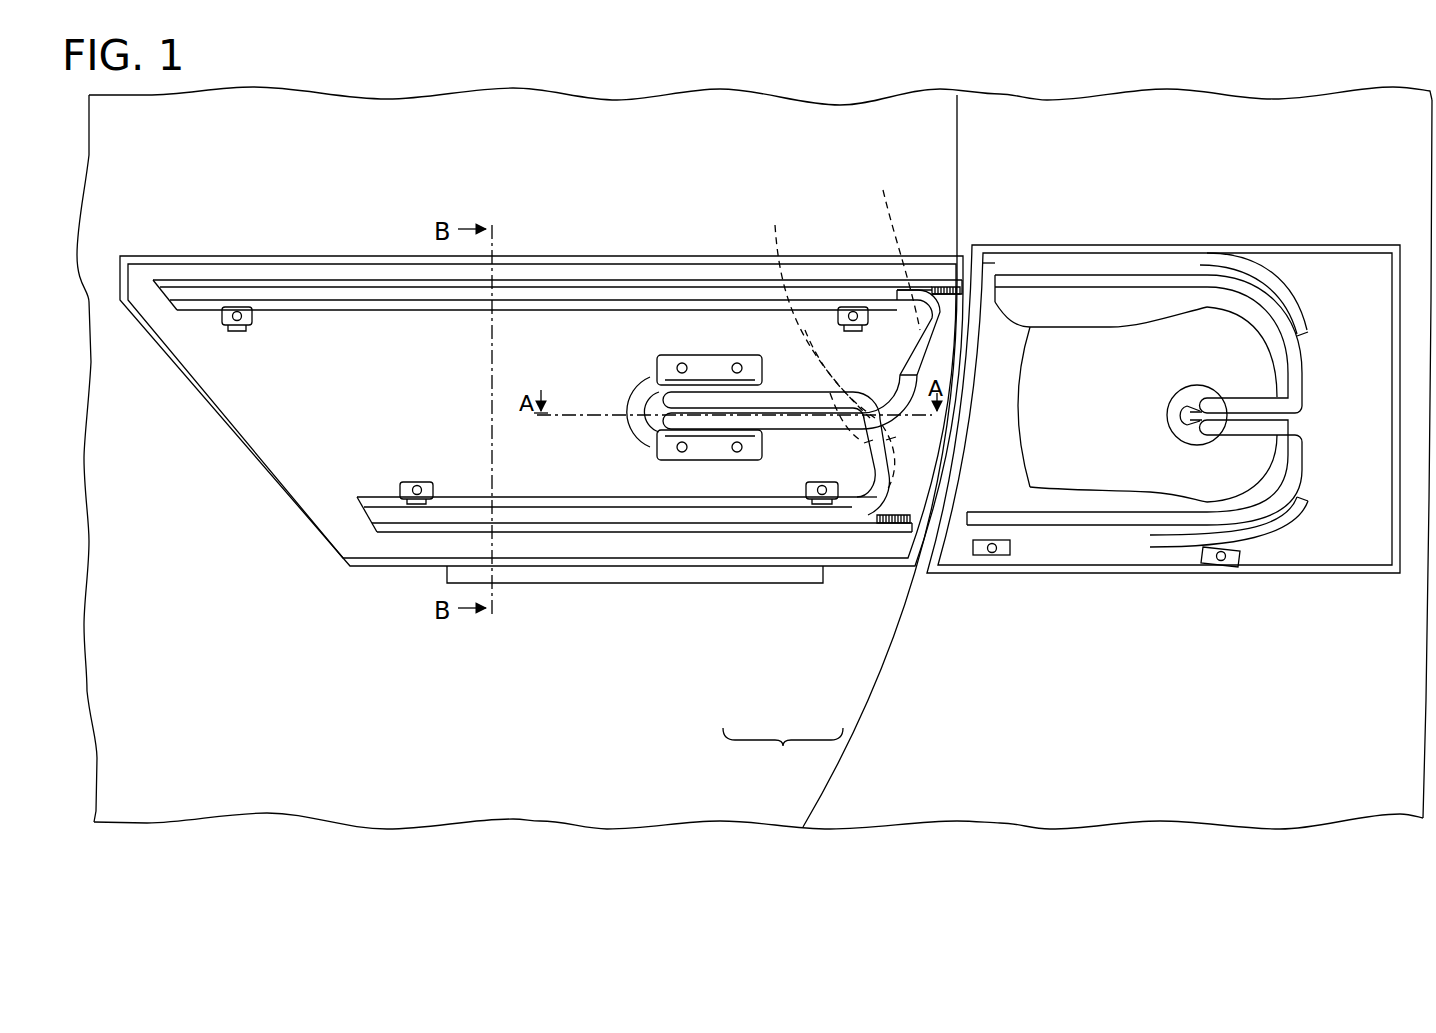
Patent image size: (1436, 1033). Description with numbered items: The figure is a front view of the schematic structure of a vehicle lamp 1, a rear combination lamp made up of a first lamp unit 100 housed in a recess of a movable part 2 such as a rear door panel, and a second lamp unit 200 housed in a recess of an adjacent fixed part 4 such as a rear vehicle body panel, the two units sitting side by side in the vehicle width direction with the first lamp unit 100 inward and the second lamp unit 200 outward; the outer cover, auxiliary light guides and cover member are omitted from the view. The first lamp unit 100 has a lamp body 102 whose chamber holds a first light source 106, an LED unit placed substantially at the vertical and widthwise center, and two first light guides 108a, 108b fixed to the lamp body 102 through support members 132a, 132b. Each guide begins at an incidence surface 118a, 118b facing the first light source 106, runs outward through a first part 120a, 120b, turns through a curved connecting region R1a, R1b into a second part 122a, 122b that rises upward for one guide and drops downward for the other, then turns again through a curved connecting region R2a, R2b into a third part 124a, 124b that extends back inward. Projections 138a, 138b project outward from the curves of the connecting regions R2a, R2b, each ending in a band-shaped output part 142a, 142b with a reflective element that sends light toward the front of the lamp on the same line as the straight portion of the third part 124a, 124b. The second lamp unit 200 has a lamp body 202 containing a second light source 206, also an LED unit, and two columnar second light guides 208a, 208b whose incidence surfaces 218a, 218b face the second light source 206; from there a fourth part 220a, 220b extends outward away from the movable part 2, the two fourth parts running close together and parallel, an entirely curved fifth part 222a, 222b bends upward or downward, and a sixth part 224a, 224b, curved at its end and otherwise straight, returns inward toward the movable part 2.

The vehicle lamp 1 is at (783, 753).
The movable part 2 is at (515, 800).
The fixed part 4 is at (1118, 800).
The first lamp unit 100 is at (723, 598).
The second lamp unit 200 is at (1020, 624).
The lamp body 102 is at (290, 254).
The first light source 106 is at (650, 395).
The first light guide 108a is at (160, 292).
The first light guide 108b is at (368, 520).
The incidence surface 118a is at (645, 430).
The incidence surface 118b is at (658, 392).
The first part 120a is at (777, 431).
The first part 120b is at (798, 392).
The second part 122a is at (933, 357).
The second part 122b is at (873, 463).
The third part 124a is at (430, 293).
The third part 124b is at (568, 512).
The support member 132a is at (291, 311).
The support member 132b is at (453, 495).
The projection 138a is at (952, 280).
The projection 138b is at (890, 528).
The output part 142a is at (940, 282).
The output part 142b is at (877, 524).
The connecting region R1a is at (853, 374).
The connecting region R1b is at (812, 308).
The connecting region R2a is at (889, 248).
The connecting region R2b is at (886, 442).
The lamp body 202 is at (1290, 244).
The second light source 206 is at (1197, 385).
The second light guide 208a is at (1015, 292).
The second light guide 208b is at (968, 530).
The incidence surface 218a is at (1183, 408).
The incidence surface 218b is at (1183, 422).
The fourth part 220a is at (1258, 396).
The fourth part 220b is at (1258, 436).
The fifth part 222a is at (1300, 350).
The fifth part 222b is at (1297, 476).
The sixth part 224a is at (1145, 290).
The sixth part 224b is at (1172, 522).